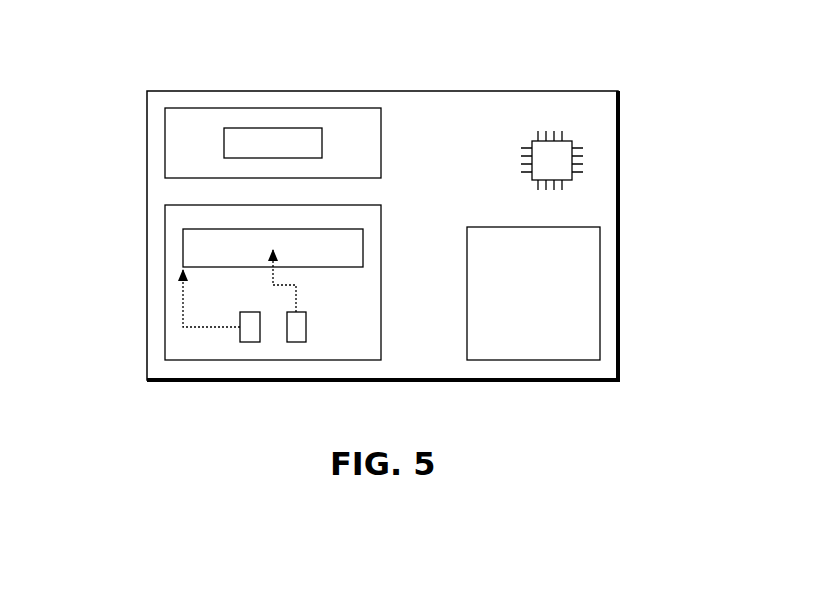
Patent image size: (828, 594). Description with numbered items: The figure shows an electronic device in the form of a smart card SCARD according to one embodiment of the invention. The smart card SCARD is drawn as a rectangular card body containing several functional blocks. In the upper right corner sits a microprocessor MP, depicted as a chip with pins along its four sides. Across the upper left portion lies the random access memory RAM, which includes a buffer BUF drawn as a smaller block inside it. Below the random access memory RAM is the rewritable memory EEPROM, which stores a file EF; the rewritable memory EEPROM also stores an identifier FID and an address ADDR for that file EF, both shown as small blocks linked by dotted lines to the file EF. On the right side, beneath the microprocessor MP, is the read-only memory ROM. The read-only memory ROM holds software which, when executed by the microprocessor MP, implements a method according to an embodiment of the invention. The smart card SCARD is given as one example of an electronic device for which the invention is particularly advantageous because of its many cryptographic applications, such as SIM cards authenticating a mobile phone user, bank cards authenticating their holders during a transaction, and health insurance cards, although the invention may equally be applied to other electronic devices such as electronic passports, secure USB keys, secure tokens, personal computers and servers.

The smart card SCARD is at (582, 89).
The random access memory RAM is at (206, 135).
The buffer BUF is at (294, 135).
The rewritable memory EEPROM is at (202, 343).
The file EF is at (190, 245).
The identifier FID is at (245, 336).
The address ADDR is at (300, 334).
The microprocessor MP is at (549, 160).
The read-only memory ROM is at (563, 327).